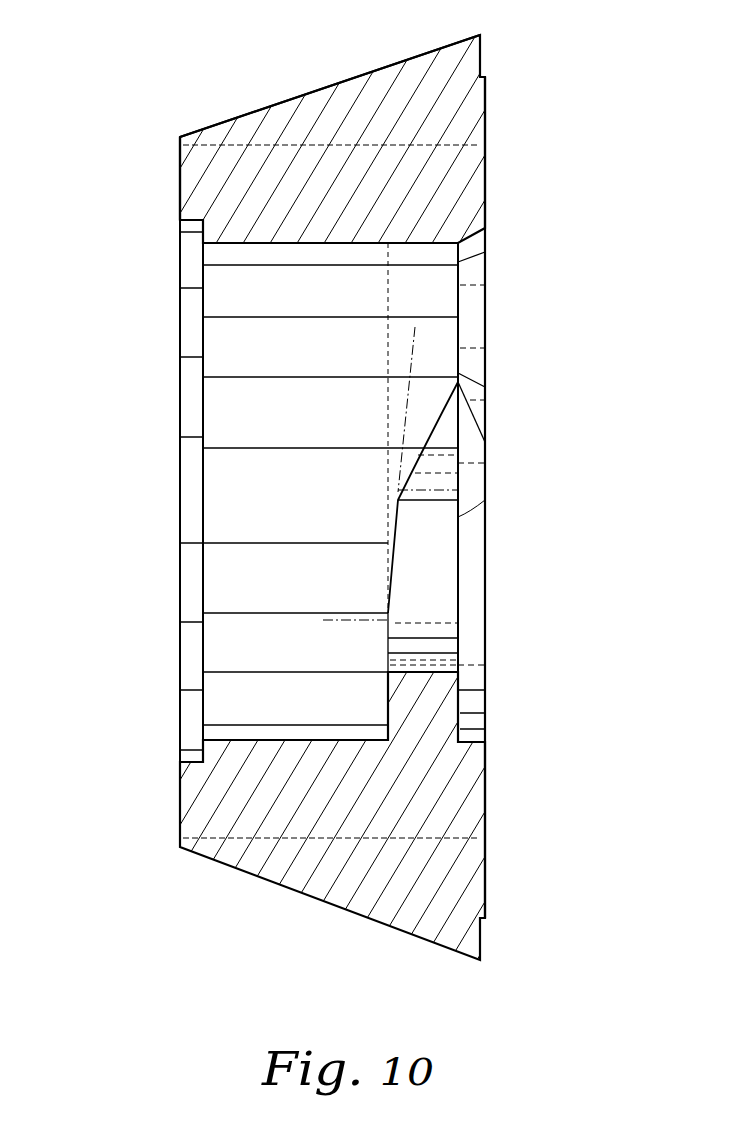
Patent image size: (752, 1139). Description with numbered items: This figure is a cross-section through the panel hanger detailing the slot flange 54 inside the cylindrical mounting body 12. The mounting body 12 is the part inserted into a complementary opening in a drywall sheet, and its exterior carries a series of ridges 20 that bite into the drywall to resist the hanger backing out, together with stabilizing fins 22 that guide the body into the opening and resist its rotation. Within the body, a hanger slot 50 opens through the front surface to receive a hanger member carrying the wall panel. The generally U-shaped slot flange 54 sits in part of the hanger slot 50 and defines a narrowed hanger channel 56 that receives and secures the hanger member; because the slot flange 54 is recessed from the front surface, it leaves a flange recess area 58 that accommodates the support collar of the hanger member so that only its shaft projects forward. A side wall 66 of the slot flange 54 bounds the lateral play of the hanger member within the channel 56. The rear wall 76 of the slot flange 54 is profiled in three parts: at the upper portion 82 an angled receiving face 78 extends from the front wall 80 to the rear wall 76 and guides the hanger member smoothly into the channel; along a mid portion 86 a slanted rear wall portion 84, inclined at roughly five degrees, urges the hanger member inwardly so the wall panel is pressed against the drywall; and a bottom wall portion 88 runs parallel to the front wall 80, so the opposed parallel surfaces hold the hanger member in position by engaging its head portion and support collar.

The cylindrical mounting body 12 is at (471, 170).
The ridges 20 is at (218, 122).
The stabilizing fins 22 is at (333, 87).
The hanger slot 50 is at (437, 327).
The slot flange 54 is at (443, 683).
The narrowed hanger channel 56 is at (440, 578).
The flange recess area 58 is at (477, 702).
The side wall 66 is at (452, 518).
The rear wall 76 is at (387, 653).
The angled receiving face 78 is at (450, 425).
The front wall 80 is at (458, 463).
The upper portion 82 is at (430, 438).
The slanted rear wall portion 84 is at (393, 508).
The mid portion 86 is at (387, 527).
The bottom wall portion 88 is at (387, 695).